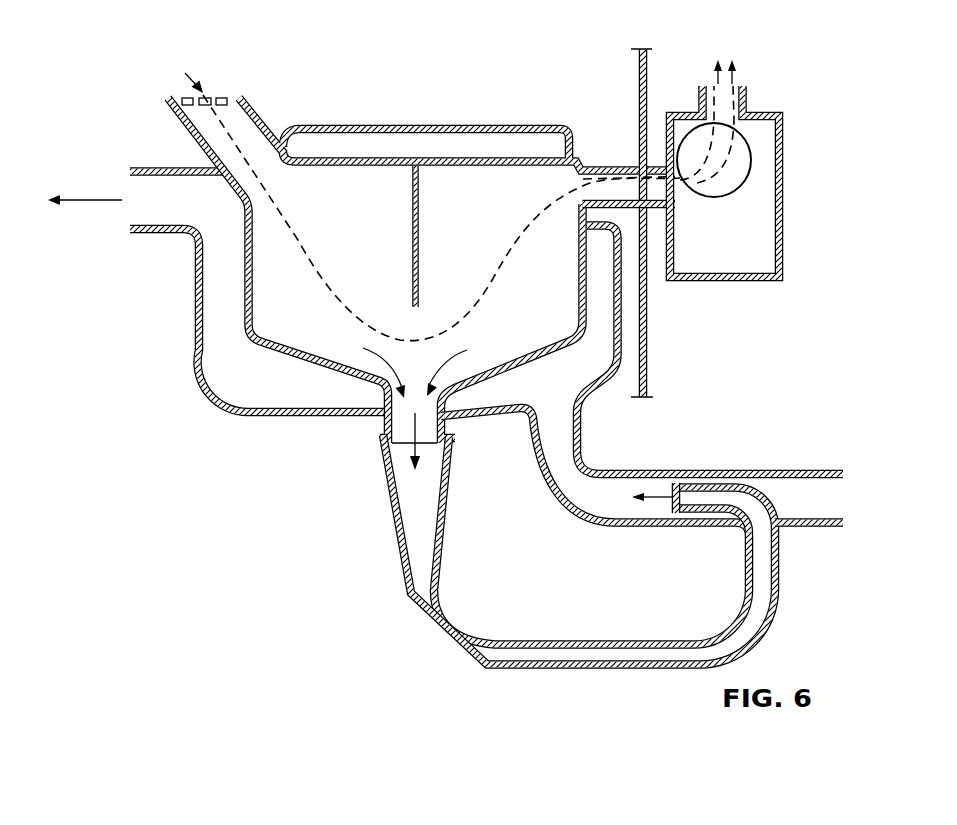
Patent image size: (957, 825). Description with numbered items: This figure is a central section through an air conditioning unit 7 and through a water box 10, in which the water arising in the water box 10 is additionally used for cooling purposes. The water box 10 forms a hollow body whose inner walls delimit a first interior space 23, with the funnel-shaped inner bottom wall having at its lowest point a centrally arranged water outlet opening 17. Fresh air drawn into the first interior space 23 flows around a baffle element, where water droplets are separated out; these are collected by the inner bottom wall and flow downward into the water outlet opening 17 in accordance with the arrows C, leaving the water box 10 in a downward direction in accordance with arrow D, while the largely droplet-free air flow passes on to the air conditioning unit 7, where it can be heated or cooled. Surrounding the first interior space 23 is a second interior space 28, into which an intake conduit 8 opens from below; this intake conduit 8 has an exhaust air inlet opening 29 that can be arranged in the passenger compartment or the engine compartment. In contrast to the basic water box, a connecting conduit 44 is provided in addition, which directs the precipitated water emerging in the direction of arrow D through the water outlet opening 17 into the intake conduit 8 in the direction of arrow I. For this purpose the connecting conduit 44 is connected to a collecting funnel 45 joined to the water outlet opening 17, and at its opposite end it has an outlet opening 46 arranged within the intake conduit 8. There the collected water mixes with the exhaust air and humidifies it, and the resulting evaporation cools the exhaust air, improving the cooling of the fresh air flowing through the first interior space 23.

The air conditioning unit 7 is at (742, 292).
The intake conduit 8 is at (745, 472).
The water box 10 is at (201, 402).
The water outlet opening 17 is at (403, 423).
The first interior space 23 is at (287, 315).
The second interior space 28 is at (250, 388).
The exhaust air inlet opening 29 is at (833, 500).
The connecting conduit 44 is at (567, 641).
The collecting funnel 45 is at (387, 503).
The outlet opening 46 is at (676, 492).
The arrows C is at (437, 373).
The arrow D is at (420, 457).
The arrow I is at (640, 490).